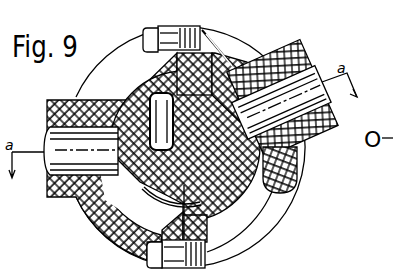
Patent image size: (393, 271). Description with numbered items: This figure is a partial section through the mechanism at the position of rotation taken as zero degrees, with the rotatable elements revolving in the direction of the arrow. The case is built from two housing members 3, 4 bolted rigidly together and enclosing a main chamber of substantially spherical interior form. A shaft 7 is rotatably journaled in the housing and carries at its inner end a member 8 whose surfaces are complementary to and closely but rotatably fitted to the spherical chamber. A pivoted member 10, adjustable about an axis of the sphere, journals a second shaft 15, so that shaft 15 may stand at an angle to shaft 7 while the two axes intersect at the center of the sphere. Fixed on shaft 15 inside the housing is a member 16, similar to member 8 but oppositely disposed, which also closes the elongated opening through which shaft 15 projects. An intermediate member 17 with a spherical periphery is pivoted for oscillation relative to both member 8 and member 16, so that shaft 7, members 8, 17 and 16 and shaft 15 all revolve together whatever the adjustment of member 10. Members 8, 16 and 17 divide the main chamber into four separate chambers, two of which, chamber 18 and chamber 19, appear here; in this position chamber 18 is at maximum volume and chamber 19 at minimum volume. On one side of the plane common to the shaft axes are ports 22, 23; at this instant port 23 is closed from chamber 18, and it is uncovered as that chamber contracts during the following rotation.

The housing member 3 is at (75, 202).
The housing member 4 is at (214, 252).
The shaft 7 is at (48, 182).
The member 8 is at (126, 201).
The member 10 is at (292, 47).
The shaft 15 is at (313, 70).
The member 16 is at (270, 213).
The intermediate member 17 is at (243, 239).
The chamber 18 is at (145, 258).
The chamber 19 is at (145, 103).
The port 22 is at (211, 52).
The port 23 is at (128, 96).